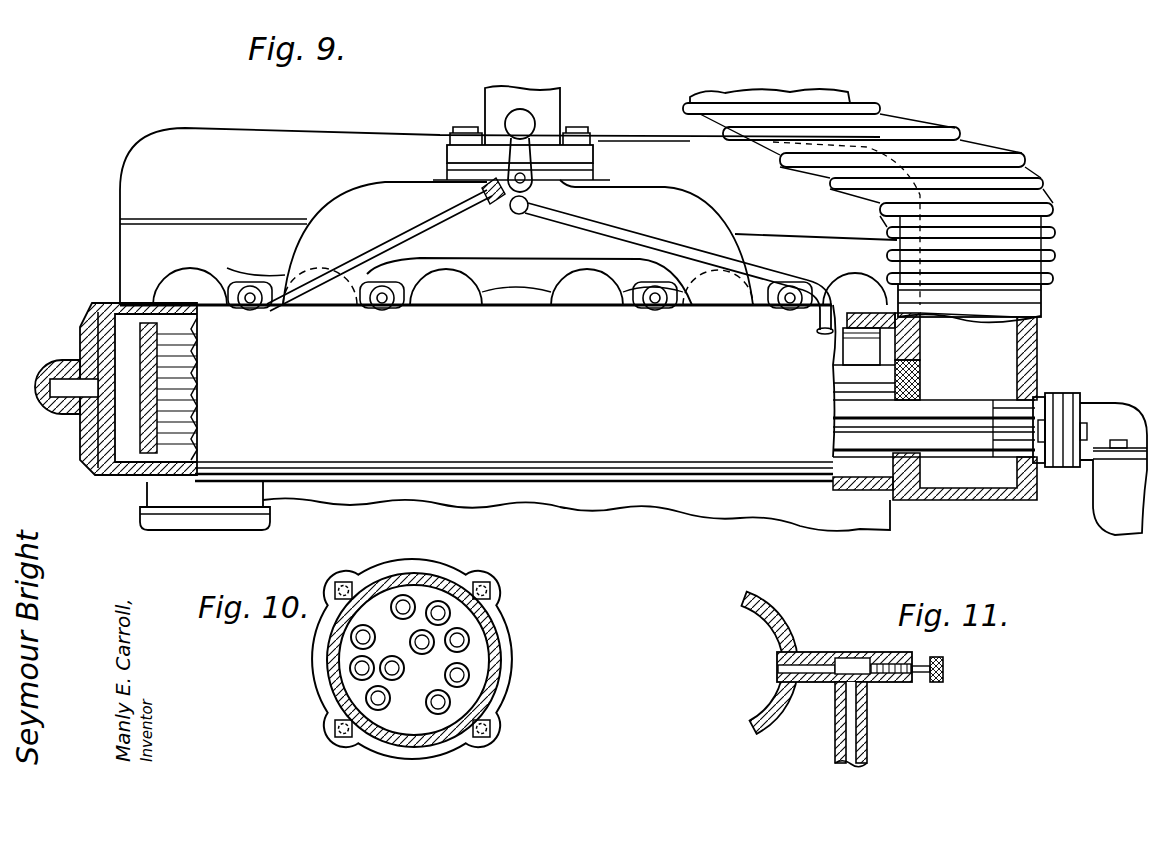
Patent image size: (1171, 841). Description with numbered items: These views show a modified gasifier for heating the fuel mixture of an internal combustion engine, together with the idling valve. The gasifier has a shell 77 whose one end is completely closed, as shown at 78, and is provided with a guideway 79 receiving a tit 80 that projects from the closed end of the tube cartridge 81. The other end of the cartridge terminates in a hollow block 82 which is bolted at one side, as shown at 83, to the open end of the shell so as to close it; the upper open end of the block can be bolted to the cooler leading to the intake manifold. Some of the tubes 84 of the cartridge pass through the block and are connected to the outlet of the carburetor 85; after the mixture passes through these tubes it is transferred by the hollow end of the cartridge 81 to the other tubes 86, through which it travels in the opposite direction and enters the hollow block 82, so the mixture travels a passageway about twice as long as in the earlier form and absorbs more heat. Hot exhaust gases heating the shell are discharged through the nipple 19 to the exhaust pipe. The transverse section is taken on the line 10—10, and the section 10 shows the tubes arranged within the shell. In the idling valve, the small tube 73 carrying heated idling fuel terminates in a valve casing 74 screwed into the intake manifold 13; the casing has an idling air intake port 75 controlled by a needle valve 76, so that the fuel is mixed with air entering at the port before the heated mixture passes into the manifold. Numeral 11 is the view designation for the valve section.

In FIG. 9, the section line 10— 10 is at (874, 302).
In FIG. 9, the pivot pins 11 is at (528, 199).
In FIG. 11, the intake manifold 13 is at (784, 648).
In FIG. 9, the nipple 19 is at (258, 520).
In FIG. 9, the small tube 73 is at (632, 232).
In FIG. 11, the small tube 73 is at (852, 742).
In FIG. 11, the valve casing 74 is at (845, 657).
In FIG. 11, the idling air intake port 75 is at (876, 656).
In FIG. 9, the needle valve 76 is at (510, 212).
In FIG. 11, the needle valve 76 is at (918, 674).
In FIG. 9, the shell 77 is at (215, 305).
In FIG. 10, the shell 77 is at (388, 578).
In FIG. 9, the closed end 78 is at (92, 316).
In FIG. 9, the guideway 79 is at (47, 372).
In FIG. 9, the tit 80 is at (70, 408).
In FIG. 9, the tube cartridge 81 is at (118, 474).
In FIG. 9, the hollow block 82 is at (1040, 326).
In FIG. 10, the bolts 83 is at (497, 592).
In FIG. 9, the tubes 84 is at (1008, 447).
In FIG. 10, the tubes 84 is at (468, 677).
In FIG. 9, the carburetor 85 is at (1118, 490).
In FIG. 9, the tubes 86 is at (852, 347).
In FIG. 10, the tubes 86 is at (412, 596).